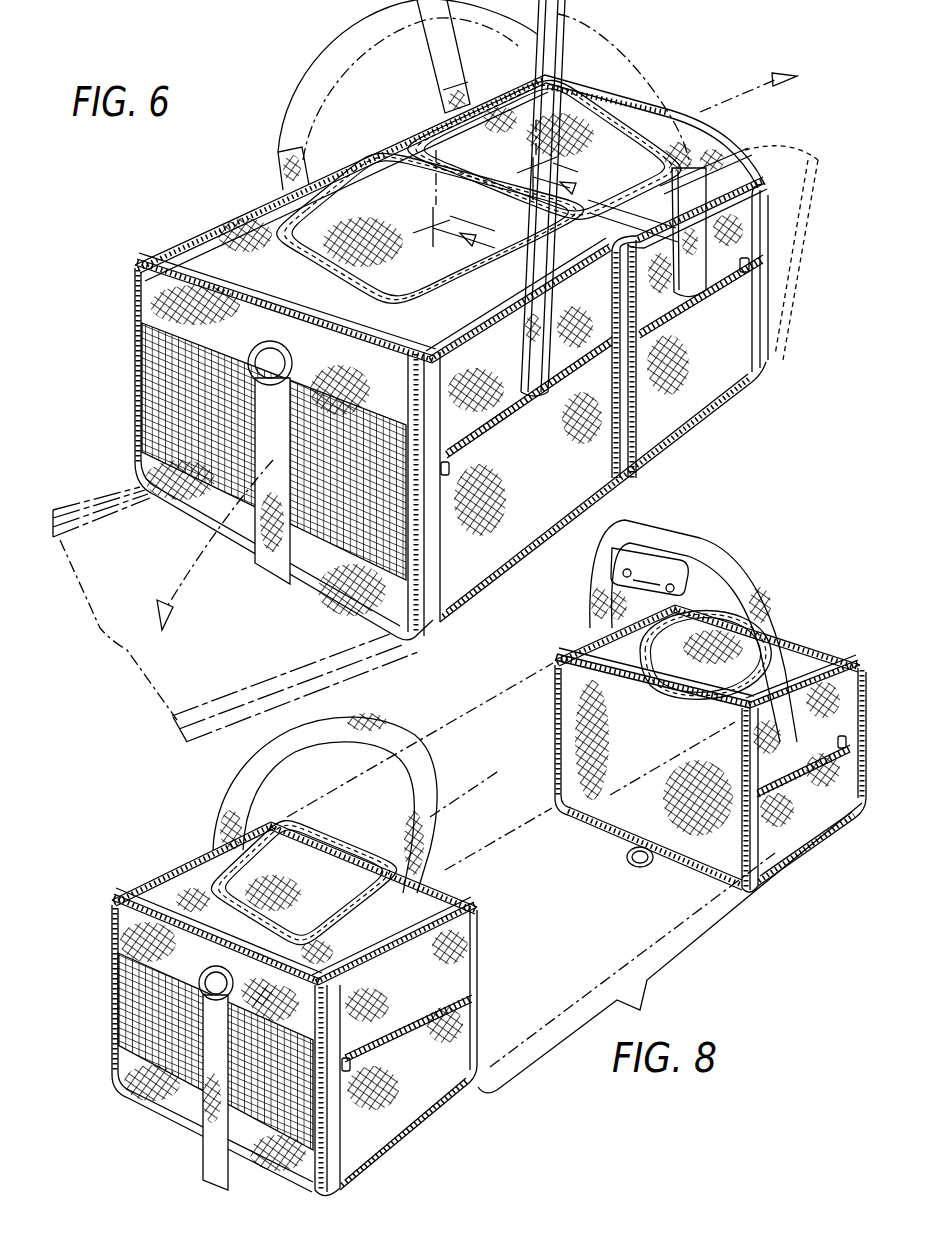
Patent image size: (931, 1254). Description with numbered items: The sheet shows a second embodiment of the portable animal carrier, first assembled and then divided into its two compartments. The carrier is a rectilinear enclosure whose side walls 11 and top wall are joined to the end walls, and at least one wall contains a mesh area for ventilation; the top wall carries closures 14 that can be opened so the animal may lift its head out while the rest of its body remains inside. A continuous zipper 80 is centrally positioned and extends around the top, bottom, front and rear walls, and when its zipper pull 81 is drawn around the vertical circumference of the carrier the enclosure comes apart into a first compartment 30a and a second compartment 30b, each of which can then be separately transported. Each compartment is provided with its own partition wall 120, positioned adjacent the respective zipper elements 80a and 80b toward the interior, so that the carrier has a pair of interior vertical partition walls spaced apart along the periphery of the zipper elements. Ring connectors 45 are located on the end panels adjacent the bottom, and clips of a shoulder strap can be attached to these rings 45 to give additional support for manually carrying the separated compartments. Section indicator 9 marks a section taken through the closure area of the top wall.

In FIG. 6, the closure 14 is at (396, 220).
In FIG. 6, the section line 9 is at (504, 194).
In FIG. 6, the side wall 11 is at (807, 183).
In FIG. 6, the continuous zipper 80 is at (655, 452).
In FIG. 8, the zipper pull 81 is at (607, 632).
In FIG. 8, the partition wall 120 is at (557, 783).
In FIG. 8, the ring connector 45 is at (122, 971).
In FIG. 8, the zipper element 80a is at (480, 1011).
In FIG. 8, the zipper element 80b is at (697, 878).
In FIG. 8, the compartment 30a is at (311, 954).
In FIG. 8, the compartment 30b is at (686, 719).